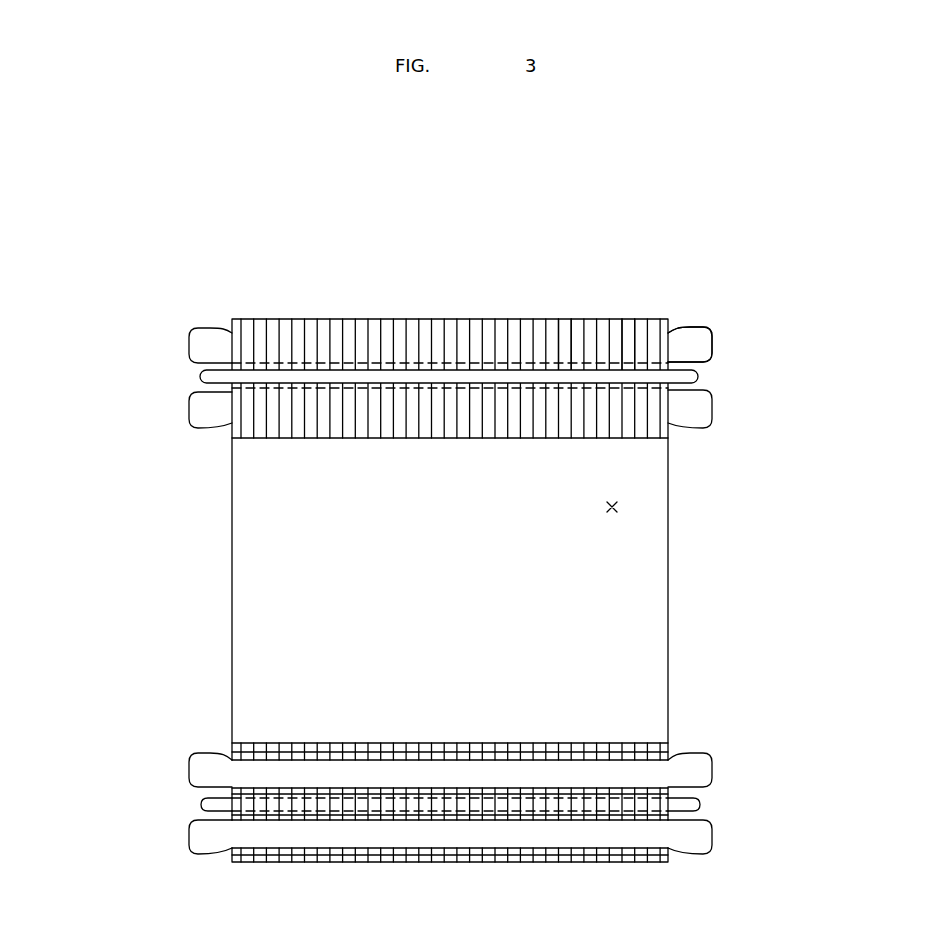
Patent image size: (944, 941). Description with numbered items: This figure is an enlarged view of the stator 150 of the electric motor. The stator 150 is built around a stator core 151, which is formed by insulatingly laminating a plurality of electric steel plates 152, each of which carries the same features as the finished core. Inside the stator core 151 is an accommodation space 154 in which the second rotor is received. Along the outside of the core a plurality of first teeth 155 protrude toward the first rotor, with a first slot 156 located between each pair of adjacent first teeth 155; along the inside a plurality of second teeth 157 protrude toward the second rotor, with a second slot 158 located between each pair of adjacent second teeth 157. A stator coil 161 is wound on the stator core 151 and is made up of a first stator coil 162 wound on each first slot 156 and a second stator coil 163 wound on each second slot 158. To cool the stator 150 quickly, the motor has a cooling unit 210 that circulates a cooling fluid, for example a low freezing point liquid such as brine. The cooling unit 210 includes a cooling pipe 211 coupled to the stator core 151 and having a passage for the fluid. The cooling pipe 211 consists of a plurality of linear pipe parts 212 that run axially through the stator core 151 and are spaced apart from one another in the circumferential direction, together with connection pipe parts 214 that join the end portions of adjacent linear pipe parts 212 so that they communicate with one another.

The stator 150 is at (265, 262).
The stator core 151 is at (450, 317).
The electric steel plate 152 is at (565, 332).
The accommodation space 154 is at (618, 505).
The first teeth 155 is at (617, 857).
The first slots 156 is at (572, 813).
The second teeth 157 is at (615, 748).
The second slots 158 is at (540, 790).
The stator coil 161 is at (524, 803).
The first stator coil 162 is at (500, 837).
The second stator coil 163 is at (702, 772).
The cooling unit 210 is at (449, 560).
The cooling pipe 211 is at (475, 560).
The linear pipe part 212 is at (640, 375).
The connection pipe part 214 is at (697, 374).